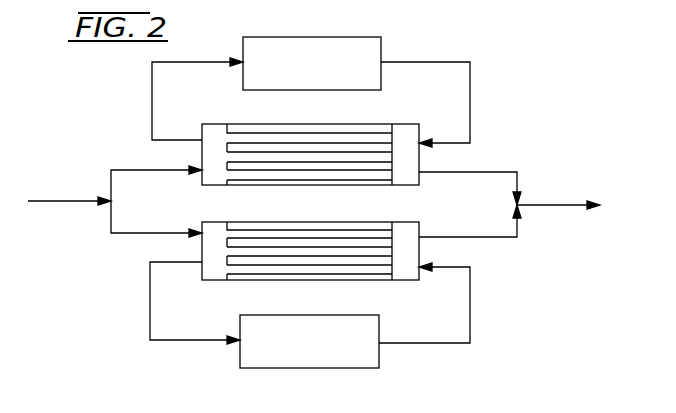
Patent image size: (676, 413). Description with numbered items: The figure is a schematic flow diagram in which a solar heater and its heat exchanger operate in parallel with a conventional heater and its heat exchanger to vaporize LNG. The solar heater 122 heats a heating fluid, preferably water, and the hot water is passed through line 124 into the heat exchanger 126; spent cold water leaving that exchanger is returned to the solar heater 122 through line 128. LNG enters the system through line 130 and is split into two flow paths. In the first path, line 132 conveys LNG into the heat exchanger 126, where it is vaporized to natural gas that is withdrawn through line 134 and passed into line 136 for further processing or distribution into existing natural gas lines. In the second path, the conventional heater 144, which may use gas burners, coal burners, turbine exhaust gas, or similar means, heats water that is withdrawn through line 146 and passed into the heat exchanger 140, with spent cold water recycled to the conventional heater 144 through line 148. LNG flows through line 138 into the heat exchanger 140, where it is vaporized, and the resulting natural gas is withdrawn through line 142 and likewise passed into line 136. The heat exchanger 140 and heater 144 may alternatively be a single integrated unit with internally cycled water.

The solar heater 122 is at (343, 37).
The line 124 is at (470, 97).
The heat exchanger 126 is at (224, 124).
The line 128 is at (152, 90).
The line 130 is at (78, 203).
The line 132 is at (138, 170).
The line 134 is at (500, 172).
The line 136 is at (557, 208).
The line 138 is at (132, 238).
The heat exchanger 140 is at (407, 222).
The line 142 is at (498, 238).
The conventional heater 144 is at (343, 368).
The line 146 is at (470, 316).
The line 148 is at (150, 305).